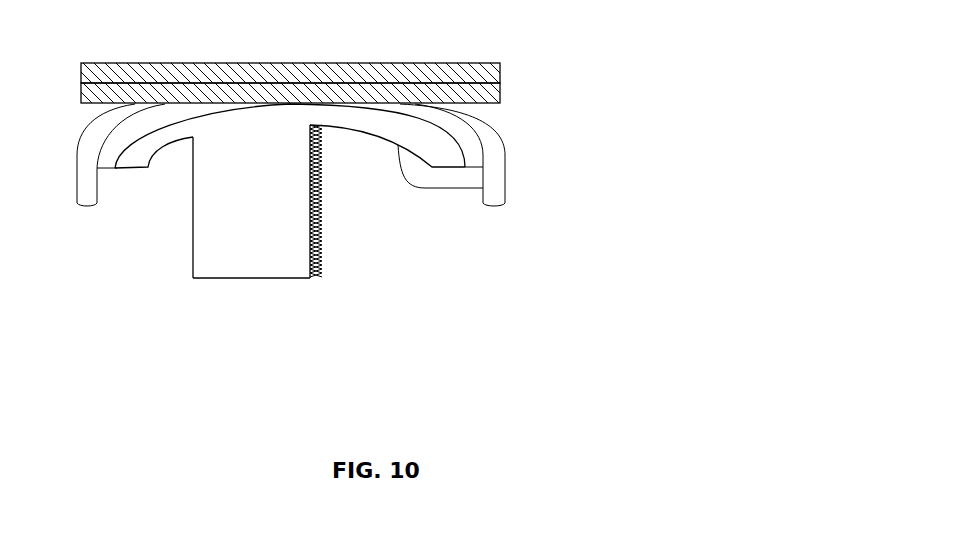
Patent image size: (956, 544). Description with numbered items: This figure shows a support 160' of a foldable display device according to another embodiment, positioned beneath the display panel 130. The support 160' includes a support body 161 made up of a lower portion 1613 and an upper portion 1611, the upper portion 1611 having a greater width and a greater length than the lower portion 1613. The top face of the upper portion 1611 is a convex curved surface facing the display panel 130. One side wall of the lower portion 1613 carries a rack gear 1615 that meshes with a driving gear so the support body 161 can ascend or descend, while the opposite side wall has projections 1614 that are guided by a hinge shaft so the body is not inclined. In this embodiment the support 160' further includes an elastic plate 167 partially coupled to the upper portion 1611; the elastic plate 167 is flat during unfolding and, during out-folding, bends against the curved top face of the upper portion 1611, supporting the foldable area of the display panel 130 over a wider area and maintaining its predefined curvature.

The display panel 130 is at (502, 73).
The elastic plate 167 is at (502, 98).
The support 160' is at (371, 226).
The support body 161 is at (572, 178).
The upper portion 1611 is at (487, 190).
The lower portion 1613 is at (286, 265).
The projections 1614 is at (193, 257).
The rack gear 1615 is at (326, 241).